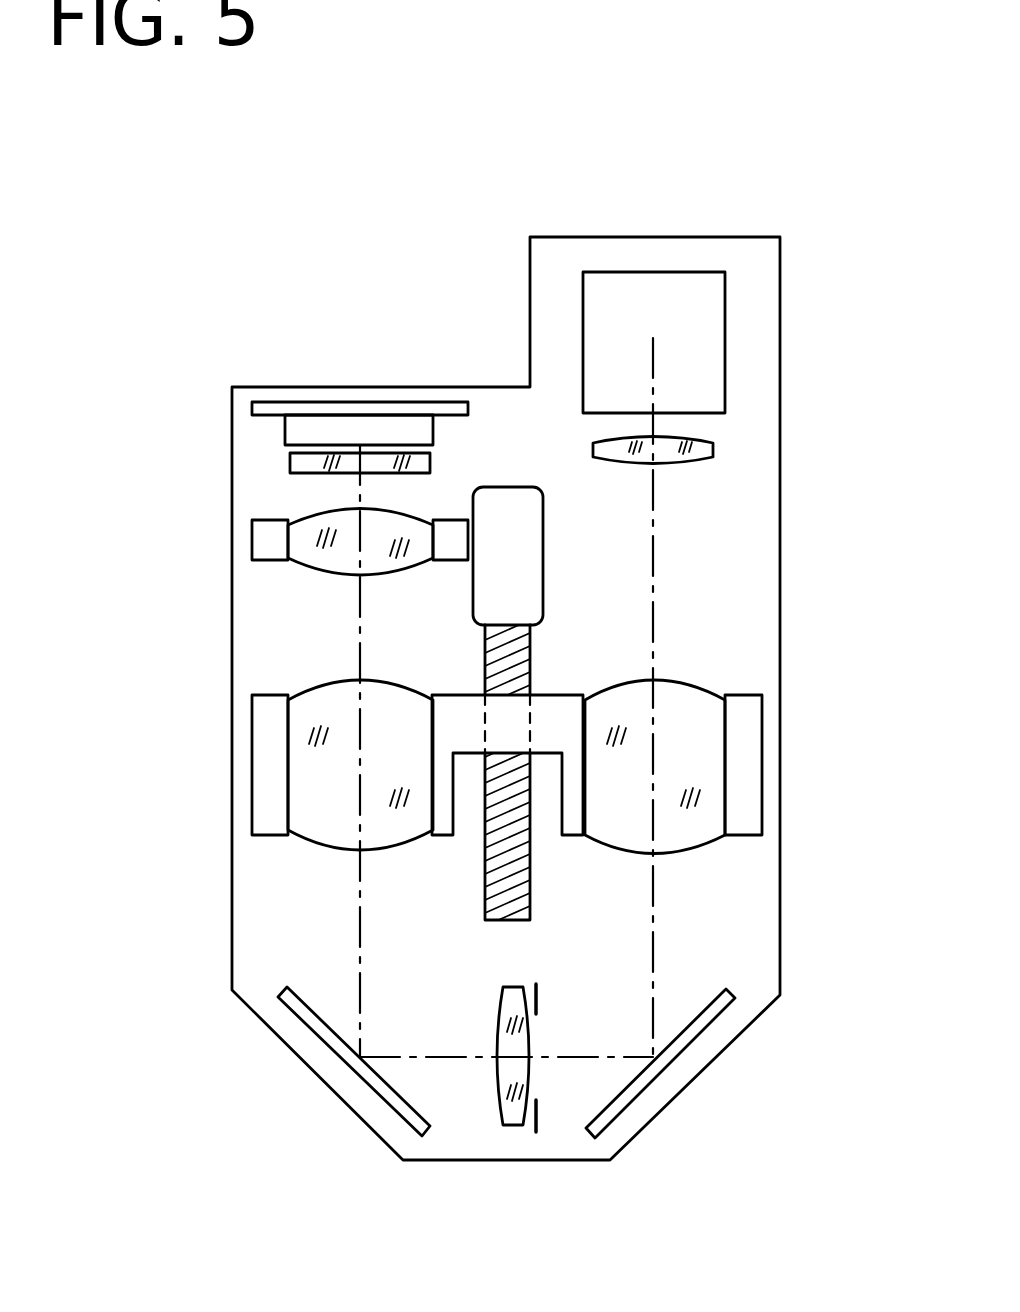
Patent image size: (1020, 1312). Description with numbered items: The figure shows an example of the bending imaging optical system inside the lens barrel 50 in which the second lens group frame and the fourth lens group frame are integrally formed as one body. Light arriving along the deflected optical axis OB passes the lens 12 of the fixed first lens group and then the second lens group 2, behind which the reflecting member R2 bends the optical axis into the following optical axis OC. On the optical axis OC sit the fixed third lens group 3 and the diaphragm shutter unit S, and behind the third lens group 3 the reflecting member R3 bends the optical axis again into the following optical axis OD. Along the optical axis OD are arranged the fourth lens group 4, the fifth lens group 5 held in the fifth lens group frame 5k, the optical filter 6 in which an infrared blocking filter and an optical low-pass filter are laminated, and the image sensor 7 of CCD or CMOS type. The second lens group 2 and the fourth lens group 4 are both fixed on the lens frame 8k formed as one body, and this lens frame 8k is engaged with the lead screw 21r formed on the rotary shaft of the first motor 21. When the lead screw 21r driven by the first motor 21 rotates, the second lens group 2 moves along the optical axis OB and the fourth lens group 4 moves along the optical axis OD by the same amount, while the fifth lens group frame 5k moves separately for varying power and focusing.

The lens barrel 50 is at (708, 208).
The second lens group 2 is at (705, 729).
The third lens group 3 is at (512, 1122).
The fourth lens group 4 is at (302, 735).
The fifth lens group 5 is at (338, 520).
The fifth lens group frame 5k is at (267, 540).
The optical filter 6 is at (383, 460).
The image sensor 7 is at (298, 432).
The lens frame 8k is at (560, 738).
The lens 12 is at (715, 445).
The first motor 21 is at (522, 530).
The lead screw 21r is at (510, 657).
The reflecting member R2 is at (680, 1043).
The reflecting member R3 is at (363, 1068).
The diaphragm shutter unit S is at (540, 1113).
The optical axis OB is at (660, 554).
The optical axis OC is at (452, 1058).
The optical axis OD is at (358, 622).